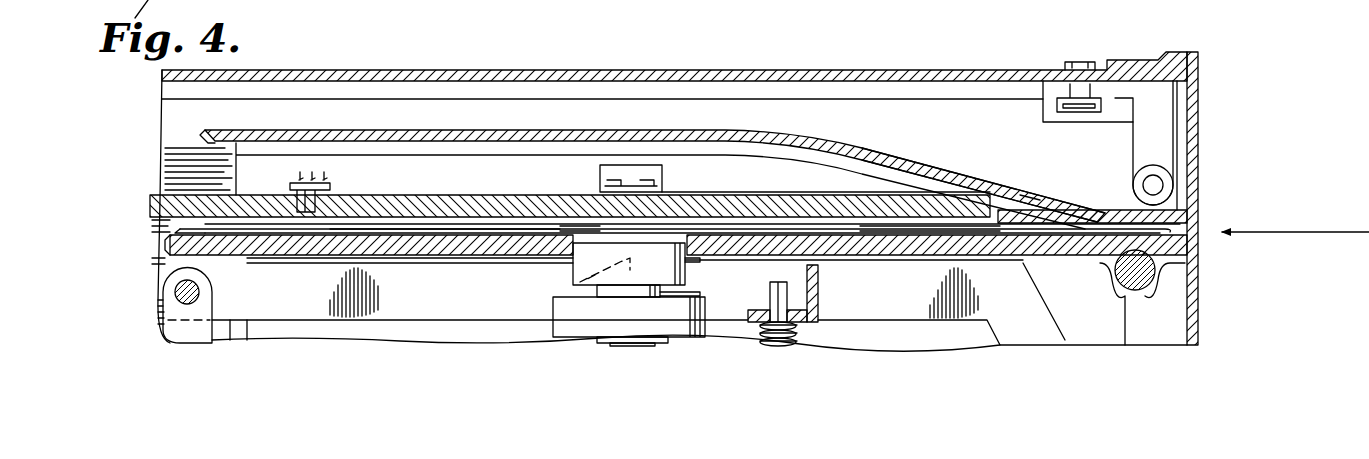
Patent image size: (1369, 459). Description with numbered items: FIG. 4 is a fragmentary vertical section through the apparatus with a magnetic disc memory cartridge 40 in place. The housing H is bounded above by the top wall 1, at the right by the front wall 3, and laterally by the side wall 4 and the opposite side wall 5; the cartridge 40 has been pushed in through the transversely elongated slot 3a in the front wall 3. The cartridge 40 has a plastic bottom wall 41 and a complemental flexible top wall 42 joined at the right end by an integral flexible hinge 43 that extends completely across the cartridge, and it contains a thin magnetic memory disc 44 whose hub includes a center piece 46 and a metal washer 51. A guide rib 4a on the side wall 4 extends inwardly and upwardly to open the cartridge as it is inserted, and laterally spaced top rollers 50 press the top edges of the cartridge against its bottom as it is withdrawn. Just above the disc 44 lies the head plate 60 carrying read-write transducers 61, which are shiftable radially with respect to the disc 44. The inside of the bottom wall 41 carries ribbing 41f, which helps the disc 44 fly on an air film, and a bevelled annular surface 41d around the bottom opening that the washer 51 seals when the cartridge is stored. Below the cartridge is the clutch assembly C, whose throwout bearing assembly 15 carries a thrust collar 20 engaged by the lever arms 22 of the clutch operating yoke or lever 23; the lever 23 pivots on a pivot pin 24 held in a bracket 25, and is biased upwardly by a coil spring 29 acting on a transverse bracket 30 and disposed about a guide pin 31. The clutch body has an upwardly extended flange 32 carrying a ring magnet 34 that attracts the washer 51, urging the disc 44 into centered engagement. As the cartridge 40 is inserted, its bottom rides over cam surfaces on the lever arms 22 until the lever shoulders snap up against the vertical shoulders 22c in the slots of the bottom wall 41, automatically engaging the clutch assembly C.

The top wall 1 is at (921, 79).
The front wall 3 is at (1196, 132).
The transversely elongated slot 3a is at (1190, 250).
The side wall 4 is at (168, 116).
The guide rib 4a is at (775, 150).
The side wall 5 is at (632, 12).
The throwout bearing assembly 15 is at (590, 344).
The thrust collar 20 is at (629, 320).
The lever arms 22 is at (573, 272).
The vertical shoulders 22c is at (685, 200).
The clutch operating yoke or lever 23 is at (338, 323).
The pivot pin 24 is at (178, 290).
The bracket 25 is at (172, 332).
The coil spring 29 is at (800, 343).
The transverse bracket 30 is at (819, 290).
The guide pin 31 is at (787, 292).
The flange 32 is at (685, 281).
The ring magnet 34 is at (688, 260).
The magnetic disc memory cartridge 40 is at (1102, 200).
The bottom wall 41 is at (348, 236).
The bevelled annular surface 41d is at (568, 240).
The ribbing 41f is at (890, 250).
The flexible top wall 42 is at (510, 130).
The integral flexible hinge 43 is at (1193, 222).
The magnetic memory disc 44 is at (450, 238).
The center piece 46 is at (1037, 205).
The top rollers 50 is at (1164, 183).
The metal washer / bottom roller 51 is at (593, 240).
The head plate 60 is at (175, 196).
The read-write transducers 61 is at (332, 190).
The coupling or clutch assembly C is at (551, 323).
The housing H is at (1208, 62).